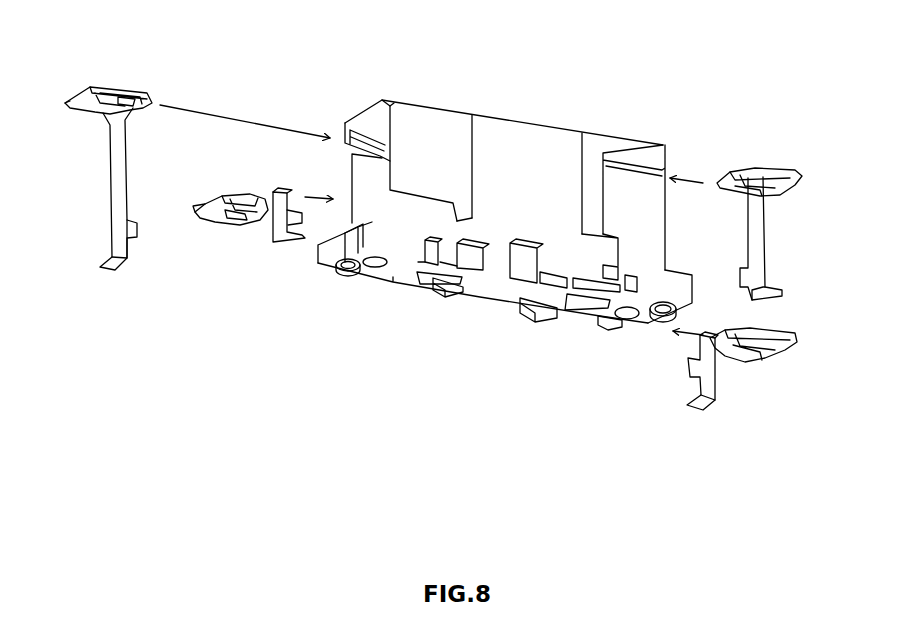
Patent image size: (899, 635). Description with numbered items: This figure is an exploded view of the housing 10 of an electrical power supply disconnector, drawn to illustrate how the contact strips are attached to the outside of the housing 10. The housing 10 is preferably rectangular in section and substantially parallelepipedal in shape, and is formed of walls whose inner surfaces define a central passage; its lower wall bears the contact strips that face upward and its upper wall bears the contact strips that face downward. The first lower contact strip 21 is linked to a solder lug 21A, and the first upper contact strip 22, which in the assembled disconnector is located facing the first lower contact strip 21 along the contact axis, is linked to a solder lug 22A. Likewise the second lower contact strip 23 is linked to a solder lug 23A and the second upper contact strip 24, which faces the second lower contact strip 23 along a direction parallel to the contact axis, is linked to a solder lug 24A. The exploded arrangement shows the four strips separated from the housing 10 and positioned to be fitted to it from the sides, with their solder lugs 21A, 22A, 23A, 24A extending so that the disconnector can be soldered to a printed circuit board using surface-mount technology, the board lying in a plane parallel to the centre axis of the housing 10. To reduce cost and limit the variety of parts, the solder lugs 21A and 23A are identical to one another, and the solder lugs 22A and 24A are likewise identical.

The housing 10 is at (536, 150).
The first lower contact strip 21 is at (205, 198).
The solder lug 21A is at (300, 238).
The first upper contact strip 22 is at (95, 113).
The solder lug 22A is at (103, 258).
The second lower contact strip 23 is at (762, 328).
The solder lug 23A is at (715, 403).
The second upper contact strip 24 is at (780, 195).
The solder lug 24A is at (787, 303).